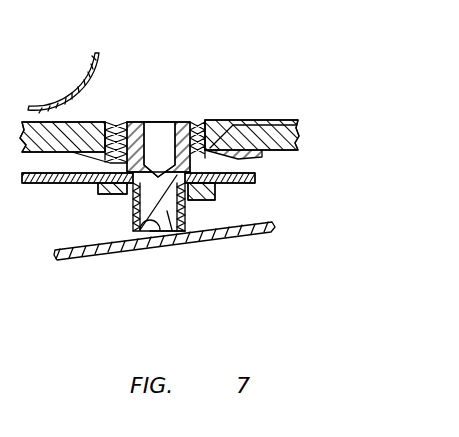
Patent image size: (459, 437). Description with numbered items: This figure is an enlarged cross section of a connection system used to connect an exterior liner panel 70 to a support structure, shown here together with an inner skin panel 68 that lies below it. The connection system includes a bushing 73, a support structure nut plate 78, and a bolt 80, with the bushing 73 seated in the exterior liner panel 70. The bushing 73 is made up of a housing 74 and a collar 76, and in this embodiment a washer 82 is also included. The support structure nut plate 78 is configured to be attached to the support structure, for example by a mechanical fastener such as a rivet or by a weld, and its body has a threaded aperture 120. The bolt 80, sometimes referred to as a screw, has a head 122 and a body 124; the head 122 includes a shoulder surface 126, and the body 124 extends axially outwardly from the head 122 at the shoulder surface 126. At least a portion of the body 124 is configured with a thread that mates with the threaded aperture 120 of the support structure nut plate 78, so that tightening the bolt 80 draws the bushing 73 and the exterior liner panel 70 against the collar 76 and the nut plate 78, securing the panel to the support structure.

The inner skin panel 68 is at (78, 258).
The exterior liner panel 70 is at (300, 131).
The bushing 73 is at (235, 103).
The housing 74 is at (112, 122).
The collar 76 is at (217, 181).
The support structure nut plate 78 is at (212, 203).
The bolt 80 is at (162, 128).
The washer 82 is at (245, 158).
The threaded aperture 120 is at (157, 240).
The head 122 is at (182, 126).
The body 124 is at (185, 240).
The shoulder surface 126 is at (125, 197).